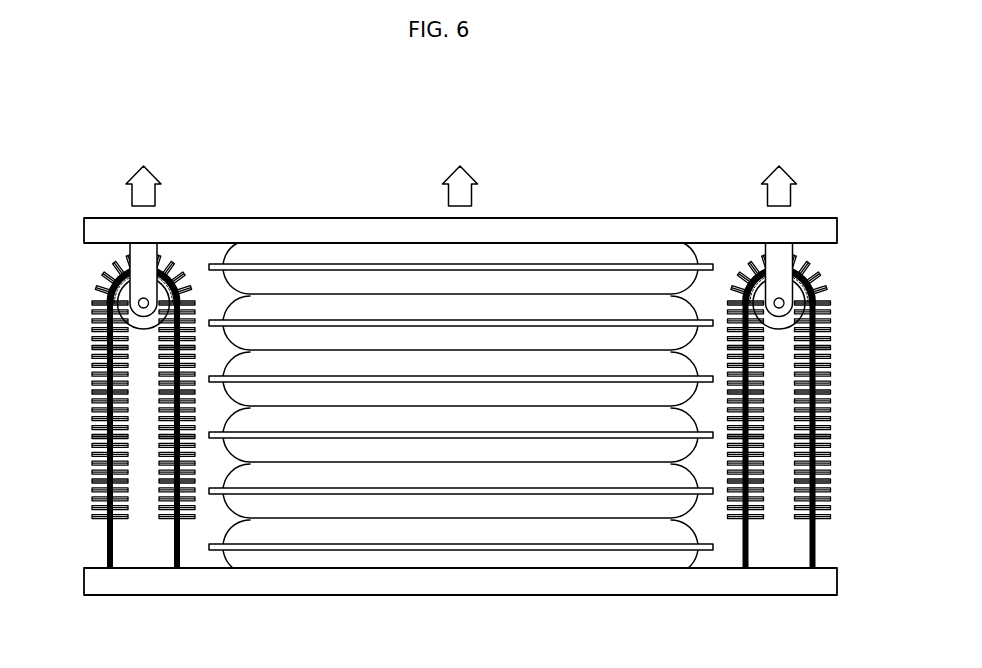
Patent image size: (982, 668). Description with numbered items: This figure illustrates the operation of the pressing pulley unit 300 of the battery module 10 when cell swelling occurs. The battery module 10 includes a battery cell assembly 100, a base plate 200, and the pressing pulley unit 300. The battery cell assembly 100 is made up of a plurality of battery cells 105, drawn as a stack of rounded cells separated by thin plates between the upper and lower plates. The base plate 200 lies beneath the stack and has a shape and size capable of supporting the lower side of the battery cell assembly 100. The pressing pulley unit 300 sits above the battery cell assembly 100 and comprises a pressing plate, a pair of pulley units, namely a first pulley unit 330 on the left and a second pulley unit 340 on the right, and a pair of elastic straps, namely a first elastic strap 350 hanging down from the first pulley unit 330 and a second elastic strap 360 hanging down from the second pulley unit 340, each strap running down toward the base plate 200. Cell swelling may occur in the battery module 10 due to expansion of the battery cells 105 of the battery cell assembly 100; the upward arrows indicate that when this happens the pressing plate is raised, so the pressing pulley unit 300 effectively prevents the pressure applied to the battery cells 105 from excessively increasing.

The battery module 10 is at (179, 141).
The battery cell assembly 100 is at (461, 443).
The battery cell 105 is at (605, 555).
The base plate 200 is at (722, 597).
The pressing pulley unit 300 is at (848, 204).
The first pulley unit 330 is at (91, 295).
The second pulley unit 340 is at (836, 292).
The first elastic strap 350 is at (81, 445).
The second elastic strap 360 is at (842, 442).